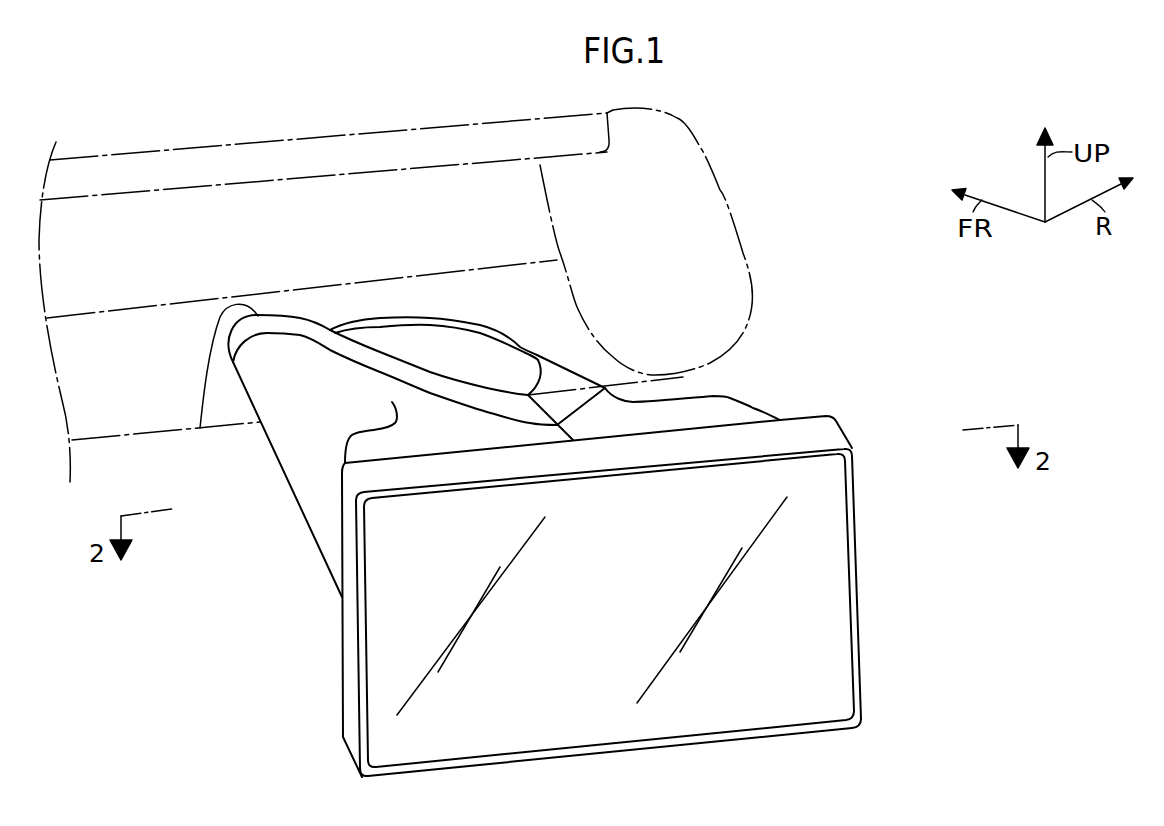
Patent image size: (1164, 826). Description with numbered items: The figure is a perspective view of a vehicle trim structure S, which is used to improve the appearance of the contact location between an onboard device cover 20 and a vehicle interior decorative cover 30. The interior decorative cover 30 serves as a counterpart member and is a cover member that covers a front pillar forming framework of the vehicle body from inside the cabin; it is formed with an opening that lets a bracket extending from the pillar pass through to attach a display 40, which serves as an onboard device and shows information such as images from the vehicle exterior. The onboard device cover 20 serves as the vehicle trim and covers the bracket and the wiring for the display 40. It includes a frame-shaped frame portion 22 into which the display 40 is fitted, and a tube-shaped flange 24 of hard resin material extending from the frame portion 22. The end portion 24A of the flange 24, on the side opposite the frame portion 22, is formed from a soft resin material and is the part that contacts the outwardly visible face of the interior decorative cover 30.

The vehicle trim structure S is at (748, 133).
The vehicle interior decorative cover 30 is at (750, 325).
The onboard device cover 20 is at (840, 422).
The frame portion 22 is at (857, 495).
The display 40 is at (813, 573).
The flange 24 is at (293, 507).
The end portion 24A is at (200, 428).